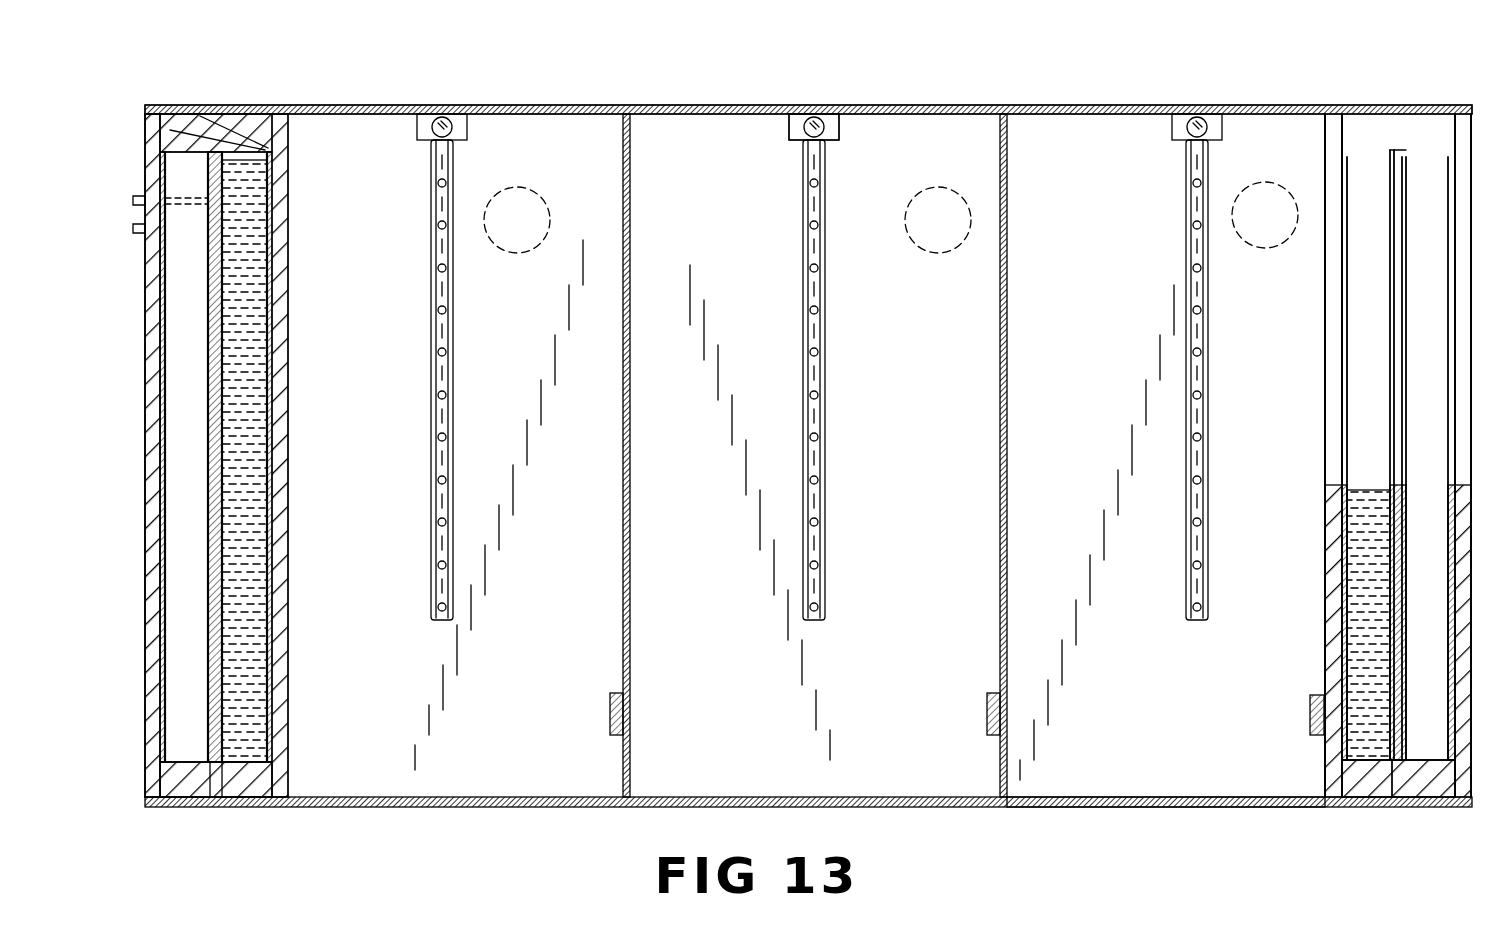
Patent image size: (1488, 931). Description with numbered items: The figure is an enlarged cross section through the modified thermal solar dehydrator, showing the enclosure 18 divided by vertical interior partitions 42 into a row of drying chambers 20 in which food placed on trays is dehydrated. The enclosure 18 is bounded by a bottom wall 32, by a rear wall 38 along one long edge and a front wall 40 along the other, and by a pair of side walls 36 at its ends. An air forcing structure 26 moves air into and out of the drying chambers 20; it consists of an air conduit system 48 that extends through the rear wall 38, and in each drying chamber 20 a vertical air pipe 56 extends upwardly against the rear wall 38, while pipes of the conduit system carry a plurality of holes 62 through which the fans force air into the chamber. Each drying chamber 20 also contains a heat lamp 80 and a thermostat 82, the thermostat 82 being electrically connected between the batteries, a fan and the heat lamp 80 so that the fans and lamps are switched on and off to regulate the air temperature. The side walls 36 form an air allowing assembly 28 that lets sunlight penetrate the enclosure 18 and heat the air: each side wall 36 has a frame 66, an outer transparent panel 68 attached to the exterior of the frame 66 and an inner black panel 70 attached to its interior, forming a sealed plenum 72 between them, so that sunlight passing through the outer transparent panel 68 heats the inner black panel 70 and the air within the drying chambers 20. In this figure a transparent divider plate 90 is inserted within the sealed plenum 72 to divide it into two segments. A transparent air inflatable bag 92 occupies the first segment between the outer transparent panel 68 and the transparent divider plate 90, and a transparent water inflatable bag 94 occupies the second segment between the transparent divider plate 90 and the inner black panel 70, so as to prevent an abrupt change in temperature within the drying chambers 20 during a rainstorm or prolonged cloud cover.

The enclosure 18 is at (648, 104).
The drying chamber 20 is at (513, 303).
The air forcing structure 26 is at (828, 466).
The air allowing assembly 28 is at (290, 312).
The bottom wall 32 is at (1122, 806).
The side wall 36 is at (290, 430).
The rear wall 38 is at (912, 104).
The front wall 40 is at (556, 808).
The vertical interior partition 42 is at (622, 348).
The air conduit system 48 is at (455, 376).
The vertical air pipe 56 is at (800, 125).
The holes 62 is at (1153, 193).
The frame 66 is at (220, 130).
The outer transparent panel 68 is at (150, 785).
The inner black panel 70 is at (285, 668).
The sealed plenum 72 is at (266, 583).
The heat lamp 80 is at (514, 200).
The thermostat 82 is at (610, 697).
The transparent divider plate 90 is at (224, 252).
The transparent air inflatable bag 92 is at (200, 800).
The transparent water inflatable bag 94 is at (248, 800).